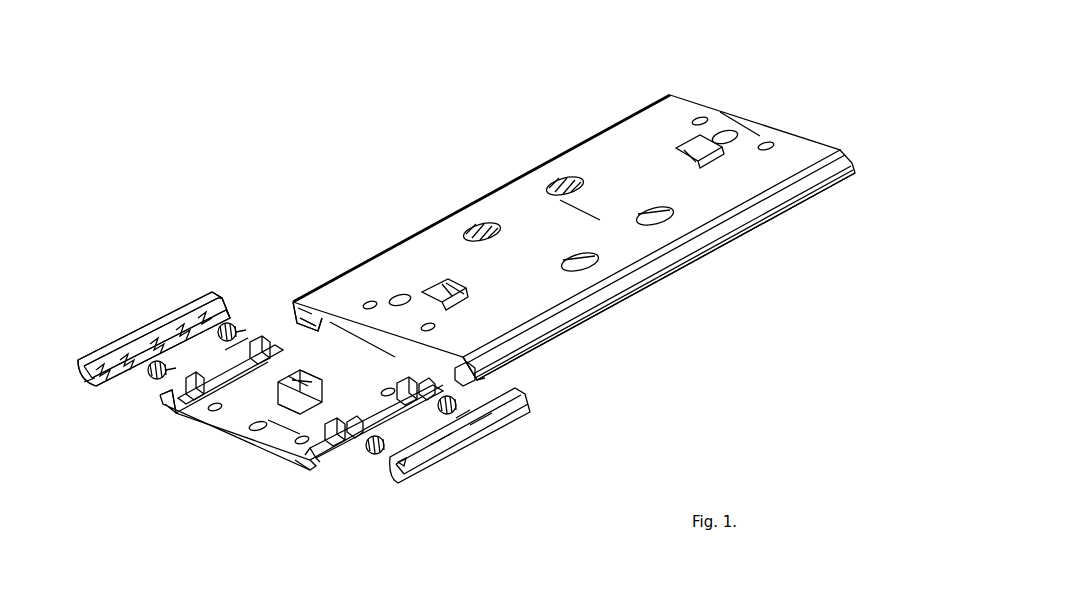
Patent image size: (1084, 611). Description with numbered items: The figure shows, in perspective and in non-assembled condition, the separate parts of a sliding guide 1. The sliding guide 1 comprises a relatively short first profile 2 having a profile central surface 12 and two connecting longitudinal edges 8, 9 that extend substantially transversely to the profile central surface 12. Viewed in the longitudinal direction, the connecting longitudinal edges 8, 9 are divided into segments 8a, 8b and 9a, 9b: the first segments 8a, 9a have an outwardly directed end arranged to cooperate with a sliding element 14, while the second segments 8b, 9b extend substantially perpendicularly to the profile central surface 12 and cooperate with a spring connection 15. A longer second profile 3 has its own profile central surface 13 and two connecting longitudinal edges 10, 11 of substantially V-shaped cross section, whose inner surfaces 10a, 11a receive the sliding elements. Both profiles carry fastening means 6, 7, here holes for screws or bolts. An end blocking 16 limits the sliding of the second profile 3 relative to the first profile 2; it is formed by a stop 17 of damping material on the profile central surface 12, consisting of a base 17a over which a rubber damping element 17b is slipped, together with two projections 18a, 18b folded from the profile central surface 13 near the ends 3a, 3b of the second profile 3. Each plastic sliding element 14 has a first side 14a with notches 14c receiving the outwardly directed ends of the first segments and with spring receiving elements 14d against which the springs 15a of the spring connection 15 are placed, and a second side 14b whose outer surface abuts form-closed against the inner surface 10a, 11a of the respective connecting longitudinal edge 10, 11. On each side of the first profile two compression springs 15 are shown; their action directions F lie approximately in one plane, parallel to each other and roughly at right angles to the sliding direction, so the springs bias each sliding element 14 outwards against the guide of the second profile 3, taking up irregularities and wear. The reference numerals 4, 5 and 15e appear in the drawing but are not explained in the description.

The sliding guide 1 is at (343, 123).
The first profile 2 is at (265, 461).
The second profile 3 is at (528, 195).
The end of the second profile 3a is at (392, 330).
The end of the second profile 3b is at (729, 108).
The rail 4 is at (162, 318).
The rail channel 5 is at (165, 326).
The fastening means 6 is at (300, 465).
The fastening means 7 is at (588, 267).
The connecting longitudinal edge 8 is at (154, 417).
The first segment 8a is at (186, 388).
The second segment 8b is at (219, 345).
The connecting longitudinal edge 9 is at (313, 452).
The first segment 9a is at (330, 448).
The second segment 9b is at (350, 446).
The connecting longitudinal edge 10 is at (294, 302).
The inner surface 10a is at (312, 318).
The connecting longitudinal edge 11 is at (492, 360).
The inner surface 11a is at (466, 368).
The profile central surface 12 is at (300, 435).
The profile central surface 13 is at (594, 226).
The sliding element 14 is at (108, 345).
The first side 14a is at (125, 350).
The second side 14b is at (84, 360).
The notch 14c is at (137, 336).
The spring receiving element 14d is at (102, 340).
The spring connection 15 is at (148, 382).
The spring 15a is at (228, 324).
The spring end 15e is at (84, 384).
The end blocking 16 is at (444, 288).
The stop 17 is at (280, 392).
The base of the stop 17a is at (292, 396).
The rubber damping element 17b is at (280, 410).
The projection 18a is at (444, 286).
The projection 18b is at (702, 152).
The action direction F is at (266, 322).